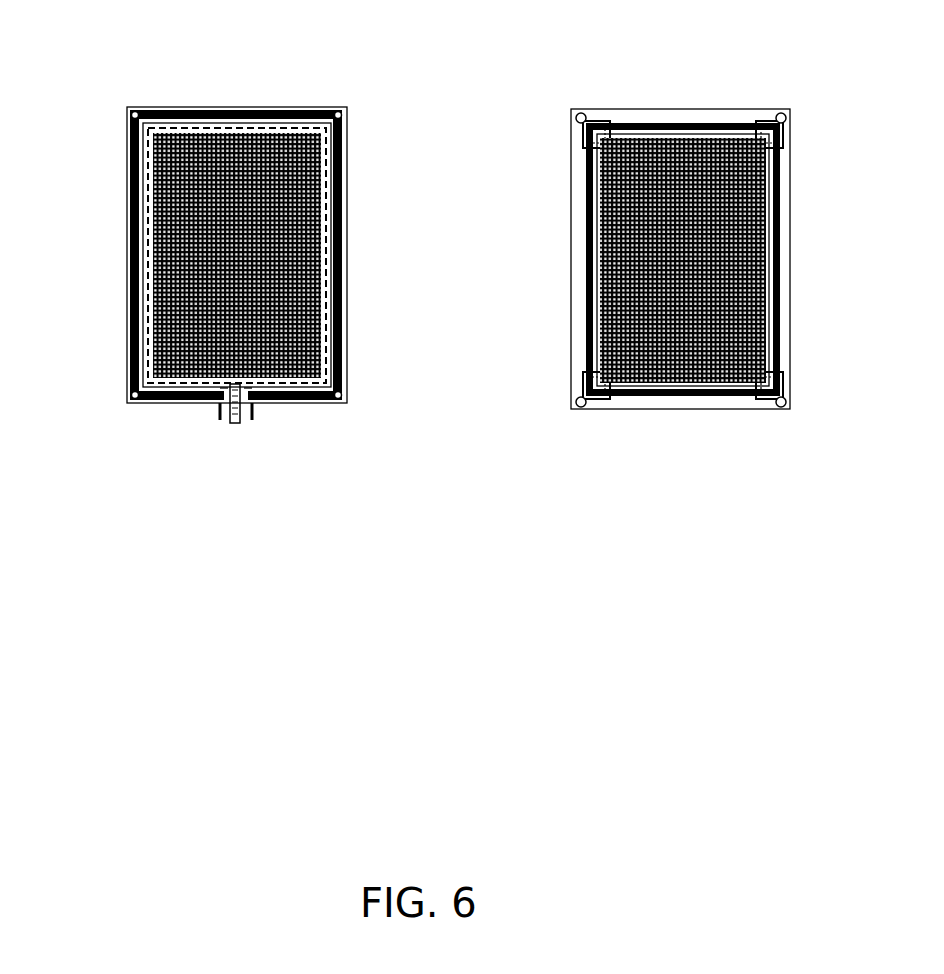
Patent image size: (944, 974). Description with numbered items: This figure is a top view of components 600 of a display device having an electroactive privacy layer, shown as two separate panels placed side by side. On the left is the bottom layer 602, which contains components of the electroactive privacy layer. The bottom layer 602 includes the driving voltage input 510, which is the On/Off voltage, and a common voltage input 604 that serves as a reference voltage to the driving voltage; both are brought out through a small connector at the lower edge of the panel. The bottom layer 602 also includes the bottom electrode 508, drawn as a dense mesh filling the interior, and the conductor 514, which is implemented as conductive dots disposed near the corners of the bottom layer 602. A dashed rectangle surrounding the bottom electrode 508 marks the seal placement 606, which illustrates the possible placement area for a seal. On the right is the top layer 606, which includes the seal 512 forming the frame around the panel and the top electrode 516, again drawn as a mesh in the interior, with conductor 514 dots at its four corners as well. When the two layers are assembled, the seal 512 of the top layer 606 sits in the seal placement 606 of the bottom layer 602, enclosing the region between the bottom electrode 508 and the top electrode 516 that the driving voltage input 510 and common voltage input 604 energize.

The heater assembly 600 is at (454, 460).
The bottom layer 602 is at (262, 601).
The common voltage input 604 is at (236, 424).
The seal placement / top layer 606 is at (148, 350).
The bottom electrode 508 is at (170, 163).
The driving voltage input 510 is at (241, 424).
The seal 512 is at (778, 214).
The conductor 514 is at (338, 111).
The top electrode 516 is at (621, 290).